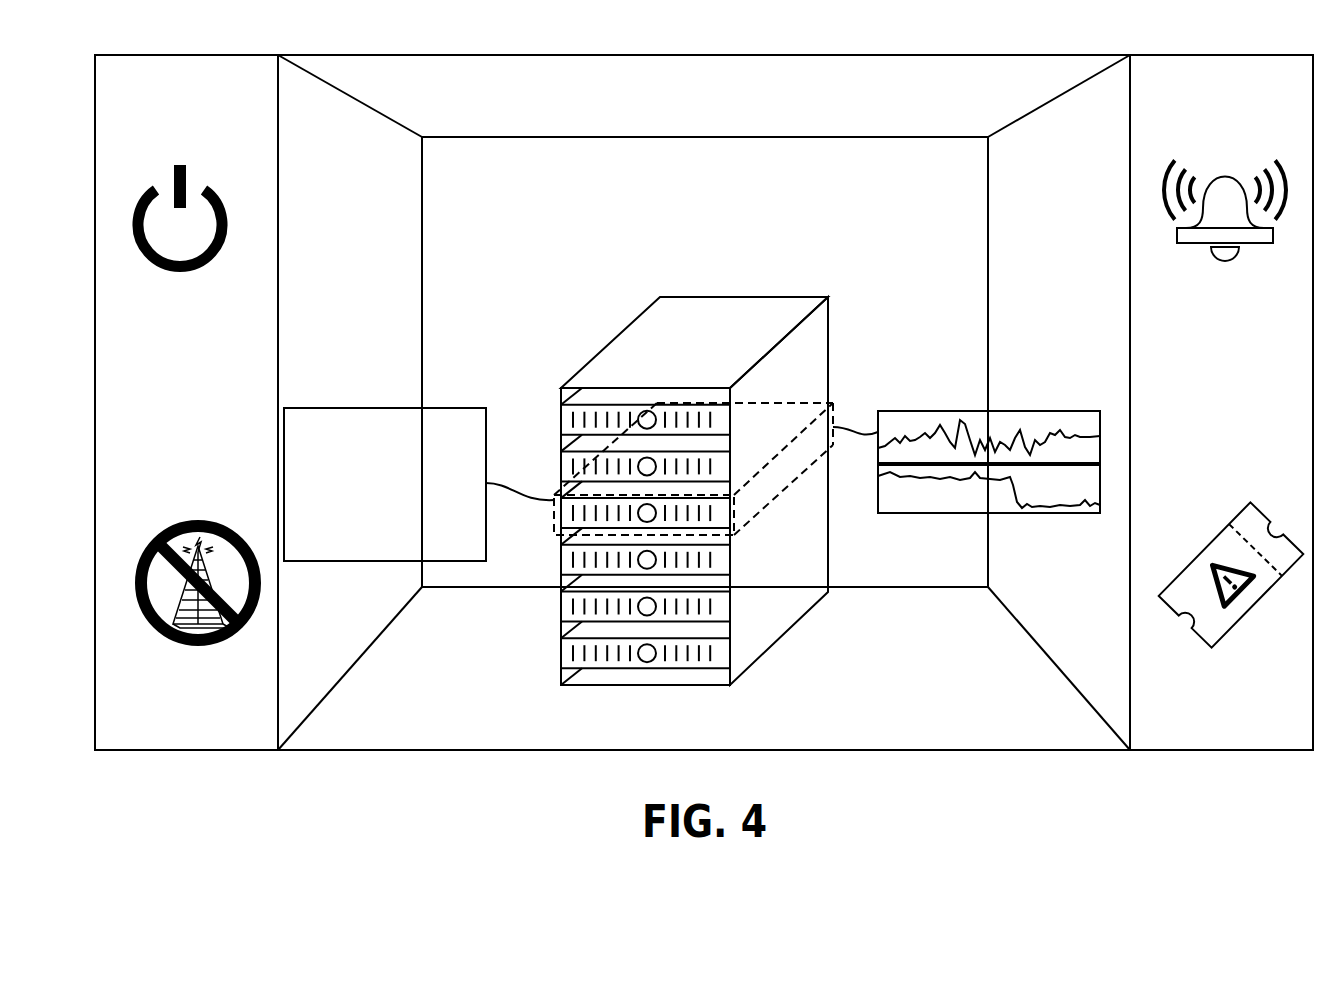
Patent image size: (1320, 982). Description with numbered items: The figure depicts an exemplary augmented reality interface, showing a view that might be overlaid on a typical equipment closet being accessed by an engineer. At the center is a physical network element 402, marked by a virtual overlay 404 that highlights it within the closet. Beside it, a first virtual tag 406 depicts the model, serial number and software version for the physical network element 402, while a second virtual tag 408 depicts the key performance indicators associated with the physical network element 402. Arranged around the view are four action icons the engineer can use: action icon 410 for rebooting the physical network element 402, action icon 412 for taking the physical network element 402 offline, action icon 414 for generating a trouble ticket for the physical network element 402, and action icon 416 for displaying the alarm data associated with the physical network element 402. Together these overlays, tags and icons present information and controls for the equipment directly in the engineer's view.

The physical network element 402 is at (575, 517).
The virtual overlay 404 is at (790, 483).
The first virtual tag 406 is at (455, 408).
The second virtual tag 408 is at (908, 411).
The action icon 410 is at (217, 187).
The action icon 412 is at (232, 522).
The action icon 414 is at (1218, 647).
The action icon 416 is at (1200, 247).